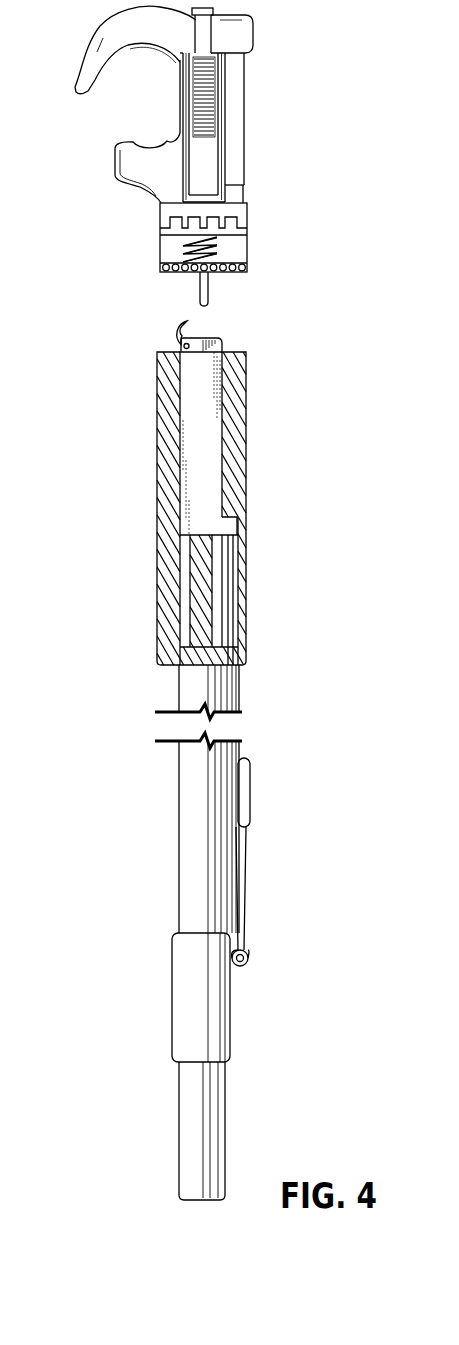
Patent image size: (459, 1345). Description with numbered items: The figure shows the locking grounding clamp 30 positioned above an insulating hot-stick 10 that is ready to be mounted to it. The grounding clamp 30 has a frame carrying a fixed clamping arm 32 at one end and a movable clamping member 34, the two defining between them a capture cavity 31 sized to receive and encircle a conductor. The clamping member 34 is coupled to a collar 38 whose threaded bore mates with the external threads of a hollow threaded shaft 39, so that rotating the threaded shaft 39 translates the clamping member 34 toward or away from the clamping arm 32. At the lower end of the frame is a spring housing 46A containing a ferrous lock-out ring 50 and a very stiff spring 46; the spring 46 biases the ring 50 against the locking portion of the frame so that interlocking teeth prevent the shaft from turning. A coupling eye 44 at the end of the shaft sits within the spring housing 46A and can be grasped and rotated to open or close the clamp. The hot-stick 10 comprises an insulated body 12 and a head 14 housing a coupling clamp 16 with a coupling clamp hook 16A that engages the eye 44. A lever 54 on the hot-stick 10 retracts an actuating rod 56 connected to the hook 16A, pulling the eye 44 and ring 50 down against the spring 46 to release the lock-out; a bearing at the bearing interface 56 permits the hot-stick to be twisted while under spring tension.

The hot-stick 10 is at (323, 425).
The insulated body 12 is at (180, 772).
The head 14 is at (246, 395).
The coupling clamp 16 is at (222, 349).
The coupling clamp hook 16A is at (165, 333).
The locking grounding clamp 30 is at (303, 50).
The capture cavity 31 is at (162, 112).
The clamping member (clamping arm) 32 is at (99, 21).
The clamping member 34 is at (147, 194).
The collar 38 is at (205, 160).
The threaded shaft 39 is at (217, 100).
The coupling eye 44 is at (246, 271).
The spring 46 is at (243, 247).
The spring housing 46A is at (160, 246).
The lock-out ring 50 is at (241, 229).
The lever 54 is at (248, 840).
The actuating rod / bearing interface 56 is at (180, 273).